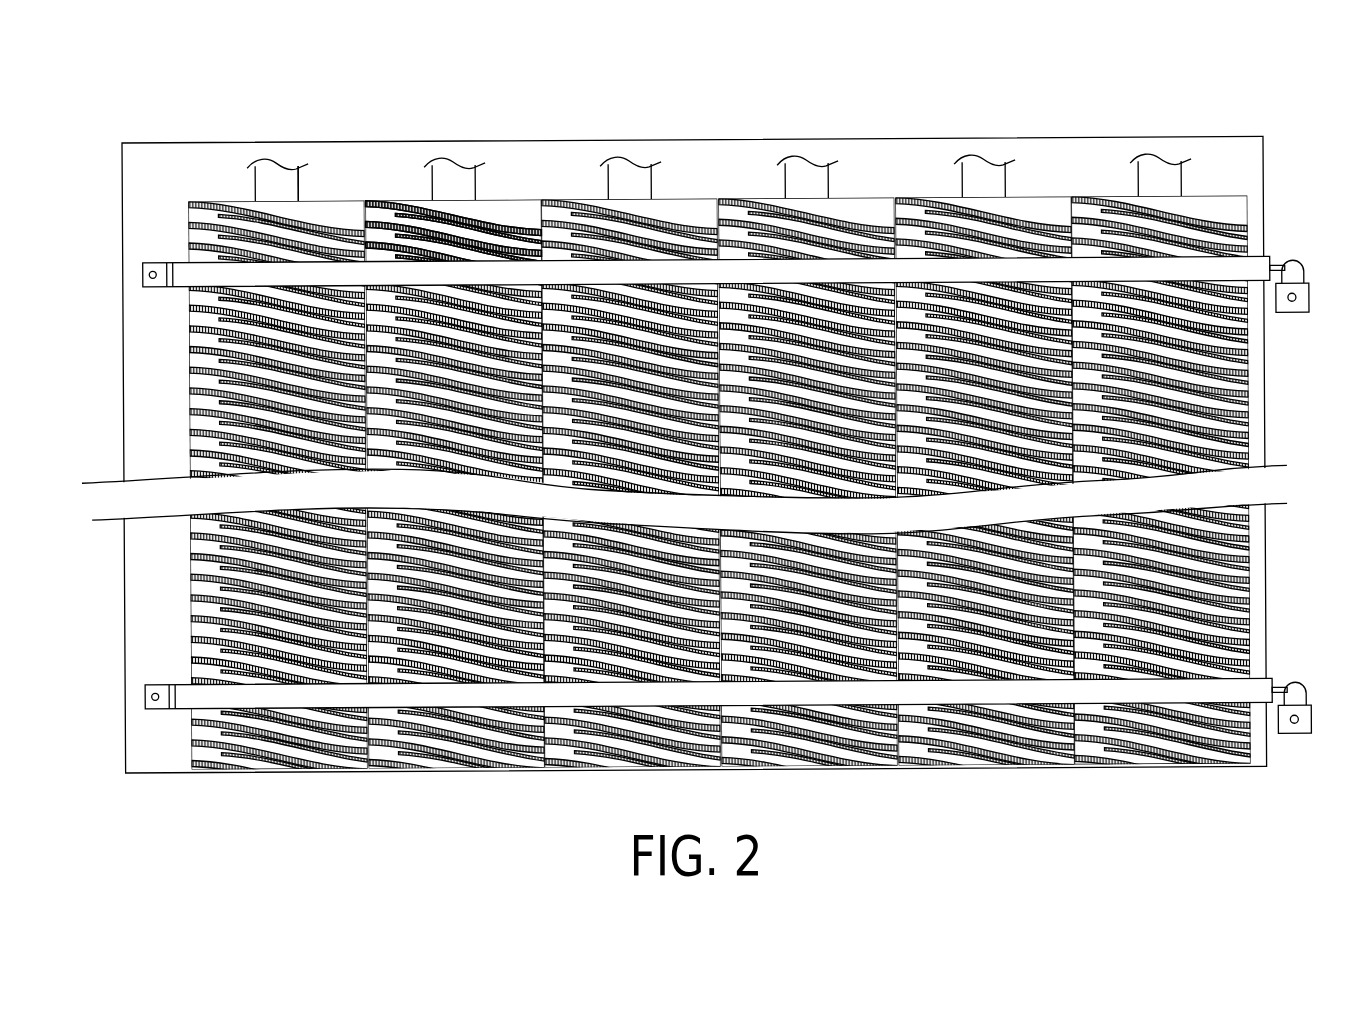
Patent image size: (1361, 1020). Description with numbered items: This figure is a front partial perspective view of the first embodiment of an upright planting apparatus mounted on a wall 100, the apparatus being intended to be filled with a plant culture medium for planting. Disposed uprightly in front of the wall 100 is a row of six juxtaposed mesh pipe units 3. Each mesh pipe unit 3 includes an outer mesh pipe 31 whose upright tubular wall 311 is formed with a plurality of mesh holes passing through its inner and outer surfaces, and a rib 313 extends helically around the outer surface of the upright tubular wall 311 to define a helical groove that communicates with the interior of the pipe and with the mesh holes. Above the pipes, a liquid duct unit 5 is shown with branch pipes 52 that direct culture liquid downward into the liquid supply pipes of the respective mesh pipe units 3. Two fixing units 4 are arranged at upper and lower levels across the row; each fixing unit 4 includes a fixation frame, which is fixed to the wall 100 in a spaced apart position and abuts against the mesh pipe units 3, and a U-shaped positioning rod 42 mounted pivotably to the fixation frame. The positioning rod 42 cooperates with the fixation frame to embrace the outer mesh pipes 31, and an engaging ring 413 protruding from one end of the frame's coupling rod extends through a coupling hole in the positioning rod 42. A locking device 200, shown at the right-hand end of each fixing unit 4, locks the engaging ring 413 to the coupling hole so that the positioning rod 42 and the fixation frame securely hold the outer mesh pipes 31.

The wall 100 is at (1063, 137).
The mesh pipe unit 3 is at (205, 202).
The outer mesh pipe 31 is at (403, 200).
The upright tubular wall 311 is at (437, 212).
The rib 313 is at (515, 213).
The fixing unit 4 is at (180, 262).
The positioning rod 42 is at (740, 272).
The engaging ring 413 is at (1275, 268).
The liquid duct unit 5 is at (272, 153).
The branch pipe 52 is at (280, 187).
The locking device 200 is at (1297, 305).